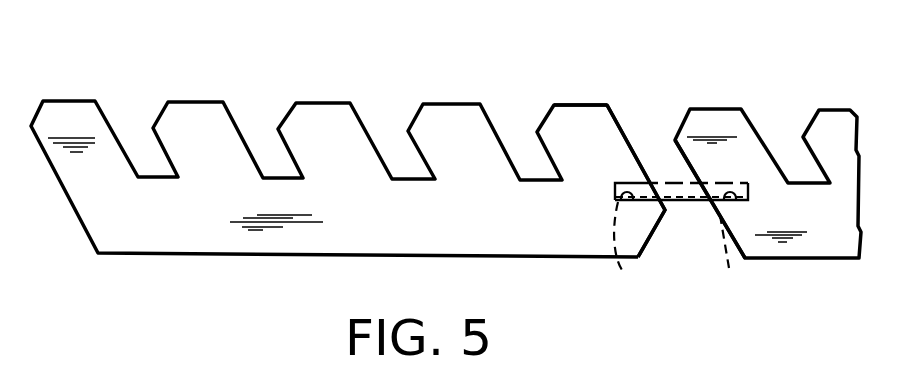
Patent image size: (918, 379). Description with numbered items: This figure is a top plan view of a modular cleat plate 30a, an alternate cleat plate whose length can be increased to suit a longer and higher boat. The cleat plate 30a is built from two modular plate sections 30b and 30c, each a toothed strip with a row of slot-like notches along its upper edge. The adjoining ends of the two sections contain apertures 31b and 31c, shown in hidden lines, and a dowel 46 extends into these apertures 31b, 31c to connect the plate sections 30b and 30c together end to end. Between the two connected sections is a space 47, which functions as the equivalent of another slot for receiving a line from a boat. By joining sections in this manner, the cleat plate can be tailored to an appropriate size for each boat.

The modular cleat plate 30a is at (587, 95).
The modular plate section 30b is at (318, 96).
The modular plate section 30c is at (704, 97).
The aperture 31b is at (622, 270).
The aperture 31c is at (739, 254).
The dowel 46 is at (685, 183).
The space 47 is at (654, 153).